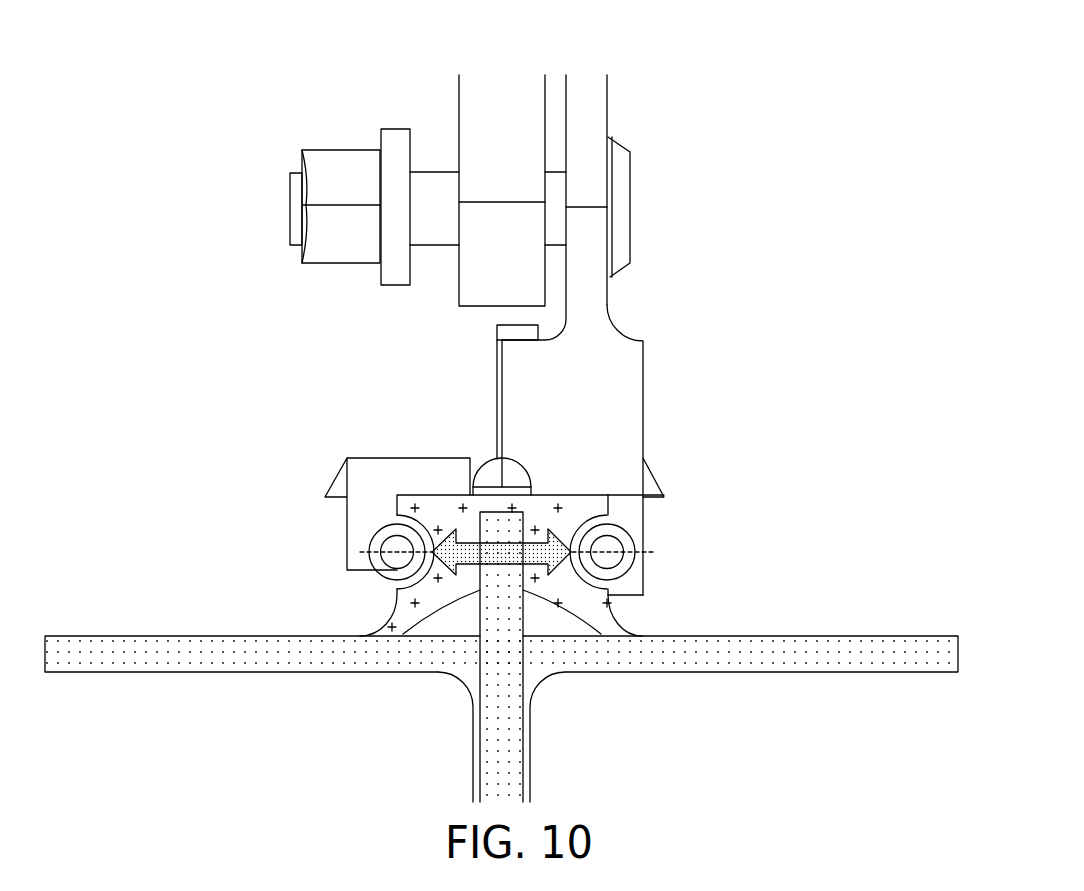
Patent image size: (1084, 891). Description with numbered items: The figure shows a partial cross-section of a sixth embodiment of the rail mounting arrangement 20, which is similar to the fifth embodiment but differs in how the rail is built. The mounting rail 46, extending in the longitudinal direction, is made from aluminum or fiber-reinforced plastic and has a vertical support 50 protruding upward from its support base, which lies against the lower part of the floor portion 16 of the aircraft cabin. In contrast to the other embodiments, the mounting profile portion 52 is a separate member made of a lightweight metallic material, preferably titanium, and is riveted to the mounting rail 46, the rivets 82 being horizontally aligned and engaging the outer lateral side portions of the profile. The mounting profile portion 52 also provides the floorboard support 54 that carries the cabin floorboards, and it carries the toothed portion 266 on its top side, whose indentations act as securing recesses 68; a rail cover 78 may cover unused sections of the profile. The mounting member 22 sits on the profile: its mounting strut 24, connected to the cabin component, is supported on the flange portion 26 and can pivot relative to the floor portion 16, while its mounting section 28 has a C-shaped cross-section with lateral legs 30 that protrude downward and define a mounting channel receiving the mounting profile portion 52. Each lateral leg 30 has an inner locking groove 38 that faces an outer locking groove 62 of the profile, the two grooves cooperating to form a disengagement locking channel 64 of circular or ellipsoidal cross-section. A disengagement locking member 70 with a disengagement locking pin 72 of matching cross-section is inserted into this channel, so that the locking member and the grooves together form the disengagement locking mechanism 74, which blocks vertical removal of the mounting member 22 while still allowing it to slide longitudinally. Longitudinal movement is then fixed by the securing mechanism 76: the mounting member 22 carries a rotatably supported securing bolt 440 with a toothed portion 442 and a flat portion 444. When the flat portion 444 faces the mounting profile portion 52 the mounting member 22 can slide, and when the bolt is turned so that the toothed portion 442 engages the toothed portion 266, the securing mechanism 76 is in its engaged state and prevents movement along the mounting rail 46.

The floor portion 16 is at (308, 85).
The rail mounting arrangement 20 is at (365, 100).
The mounting strut 24 is at (500, 90).
The flange portion 26 is at (585, 110).
The mounting member 22 is at (635, 300).
The securing mechanism 76 is at (407, 342).
The securing bolt 440 is at (477, 415).
The flat portion 444 is at (502, 488).
The toothed portion 442 is at (493, 462).
The toothed portion 266 is at (473, 490).
The disengagement locking member 70 is at (365, 477).
The securing recess 68 is at (555, 493).
The mounting section 28 is at (582, 482).
The mounting profile portion 52 is at (607, 490).
The rail cover 78 is at (648, 486).
The lateral leg 30 is at (630, 502).
The inner locking groove 38 is at (648, 522).
The disengagement locking pin 72 is at (397, 552).
The disengagement locking channel 64 is at (367, 577).
The disengagement locking mechanism 74 is at (358, 596).
The rivet 82 is at (645, 597).
The outer locking groove 62 is at (427, 575).
The floorboard support 54 is at (115, 650).
The mounting rail 46 is at (448, 729).
The vertical support 50 is at (500, 765).